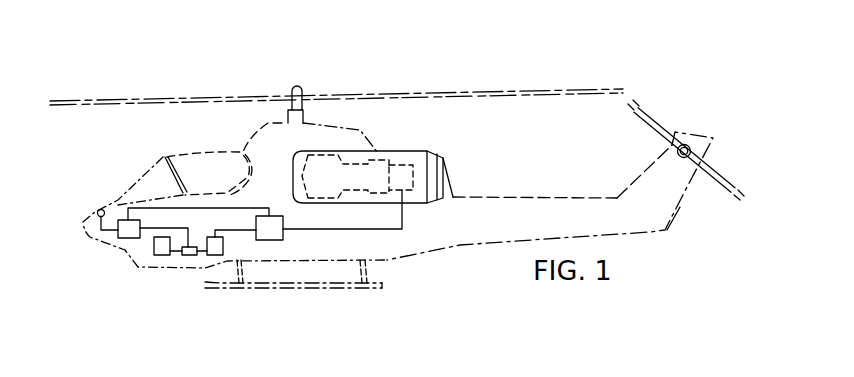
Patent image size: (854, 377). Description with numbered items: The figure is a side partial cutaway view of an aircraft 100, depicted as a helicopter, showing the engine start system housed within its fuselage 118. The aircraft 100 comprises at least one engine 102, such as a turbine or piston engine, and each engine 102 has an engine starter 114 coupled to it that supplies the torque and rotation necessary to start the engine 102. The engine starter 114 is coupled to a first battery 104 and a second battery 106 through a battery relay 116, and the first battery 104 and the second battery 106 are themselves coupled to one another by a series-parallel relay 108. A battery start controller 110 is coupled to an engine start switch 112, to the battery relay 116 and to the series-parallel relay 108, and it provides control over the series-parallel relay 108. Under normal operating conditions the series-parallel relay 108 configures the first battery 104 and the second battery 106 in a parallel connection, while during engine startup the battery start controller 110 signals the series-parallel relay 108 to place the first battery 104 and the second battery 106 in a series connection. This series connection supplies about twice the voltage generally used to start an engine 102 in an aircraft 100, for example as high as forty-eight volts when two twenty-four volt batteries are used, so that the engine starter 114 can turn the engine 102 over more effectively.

The aircraft 100 is at (238, 48).
The engine 102 is at (378, 157).
The first battery 104 is at (154, 245).
The second battery 106 is at (225, 245).
The series-parallel relay 108 is at (187, 256).
The battery start controller 110 is at (126, 220).
The engine start switch 112 is at (98, 210).
The engine starter 114 is at (403, 165).
The battery relay 116 is at (283, 236).
The fuselage 118 is at (447, 248).